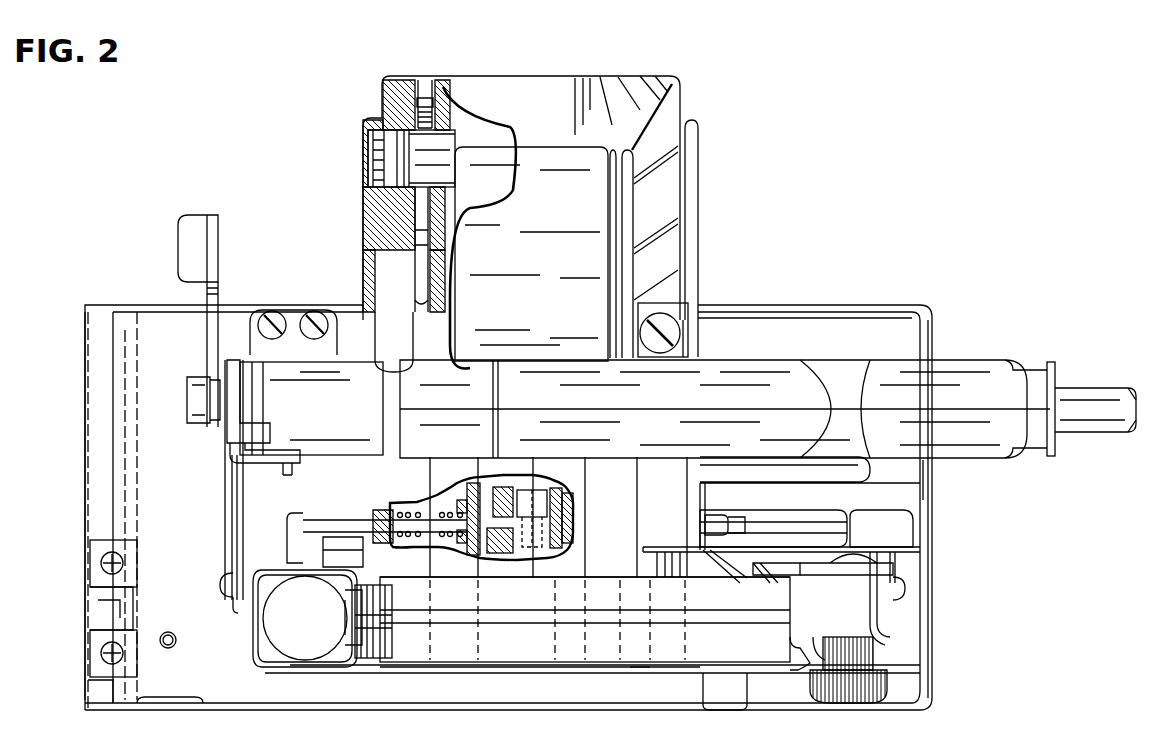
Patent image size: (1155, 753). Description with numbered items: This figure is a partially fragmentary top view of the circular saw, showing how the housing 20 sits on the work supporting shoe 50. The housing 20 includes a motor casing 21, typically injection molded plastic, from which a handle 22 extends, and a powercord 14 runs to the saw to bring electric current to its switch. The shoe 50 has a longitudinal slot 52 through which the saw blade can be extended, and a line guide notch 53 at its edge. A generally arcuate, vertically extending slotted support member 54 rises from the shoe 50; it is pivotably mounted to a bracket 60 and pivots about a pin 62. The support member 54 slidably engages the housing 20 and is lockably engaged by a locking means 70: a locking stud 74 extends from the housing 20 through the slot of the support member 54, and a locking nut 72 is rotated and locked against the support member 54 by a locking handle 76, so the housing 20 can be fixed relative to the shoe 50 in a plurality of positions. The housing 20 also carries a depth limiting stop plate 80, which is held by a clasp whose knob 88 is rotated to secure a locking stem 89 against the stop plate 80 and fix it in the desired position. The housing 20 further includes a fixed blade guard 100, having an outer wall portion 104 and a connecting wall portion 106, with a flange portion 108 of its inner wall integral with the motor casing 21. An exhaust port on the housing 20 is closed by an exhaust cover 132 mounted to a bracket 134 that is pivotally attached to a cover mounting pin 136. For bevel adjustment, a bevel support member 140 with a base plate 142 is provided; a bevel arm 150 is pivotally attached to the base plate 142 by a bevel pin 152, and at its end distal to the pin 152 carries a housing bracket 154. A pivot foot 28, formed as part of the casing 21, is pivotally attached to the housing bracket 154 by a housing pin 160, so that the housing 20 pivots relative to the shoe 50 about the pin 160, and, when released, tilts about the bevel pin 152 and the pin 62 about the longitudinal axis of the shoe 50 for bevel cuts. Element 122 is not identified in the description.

The powercord 14 is at (1108, 398).
The housing 20 is at (78, 520).
The motor casing 21 is at (552, 250).
The handle 22 is at (776, 388).
The pivot foot 28 is at (286, 425).
The work supporting shoe 50 is at (932, 672).
The longitudinal slot 52 is at (832, 520).
The line guide notch 53 is at (93, 597).
The slotted support member 54 is at (783, 558).
The bracket 60 is at (893, 630).
The pin 62 is at (905, 590).
The locking means 70 is at (698, 519).
The locking nut 72 is at (748, 526).
The locking stud 74 is at (727, 518).
The locking handle 76 is at (900, 520).
The depth limiting stop plate 80 is at (815, 568).
The knob 88 is at (848, 703).
The locking stem 89 is at (895, 550).
The fixed blade guard 100 is at (638, 672).
The outer wall portion 104 is at (420, 668).
The connecting wall portion 106 is at (495, 657).
The flange portion 108 is at (585, 557).
The lip 122 is at (722, 705).
The exhaust cover 132 is at (316, 630).
The bracket 134 is at (358, 652).
The cover mounting pin 136 is at (376, 660).
The bevel support member 140 is at (228, 516).
The base plate 142 is at (228, 541).
The bevel arm 150 is at (237, 606).
The bevel pin 152 is at (222, 586).
The housing bracket 154 is at (237, 470).
The housing pin 160 is at (283, 468).